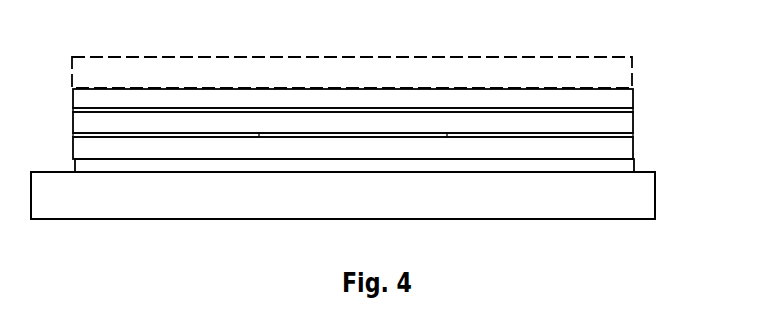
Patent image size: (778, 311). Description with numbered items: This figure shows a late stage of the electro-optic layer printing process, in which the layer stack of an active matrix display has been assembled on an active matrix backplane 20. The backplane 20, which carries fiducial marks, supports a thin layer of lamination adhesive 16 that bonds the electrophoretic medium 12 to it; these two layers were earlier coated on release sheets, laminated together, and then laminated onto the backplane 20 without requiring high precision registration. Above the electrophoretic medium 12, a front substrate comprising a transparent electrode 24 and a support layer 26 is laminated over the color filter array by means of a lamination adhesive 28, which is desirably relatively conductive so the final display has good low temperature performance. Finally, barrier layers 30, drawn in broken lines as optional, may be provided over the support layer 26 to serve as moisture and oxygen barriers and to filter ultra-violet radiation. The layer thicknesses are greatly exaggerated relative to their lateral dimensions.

The barrier layers 30 is at (295, 73).
The support layer 26 is at (413, 100).
The transparent electrode 24 is at (523, 109).
The lamination adhesive 28 is at (582, 123).
The electrophoretic medium 12 is at (588, 150).
The lamination adhesive 16 is at (590, 165).
The active matrix backplane 20 is at (343, 195).